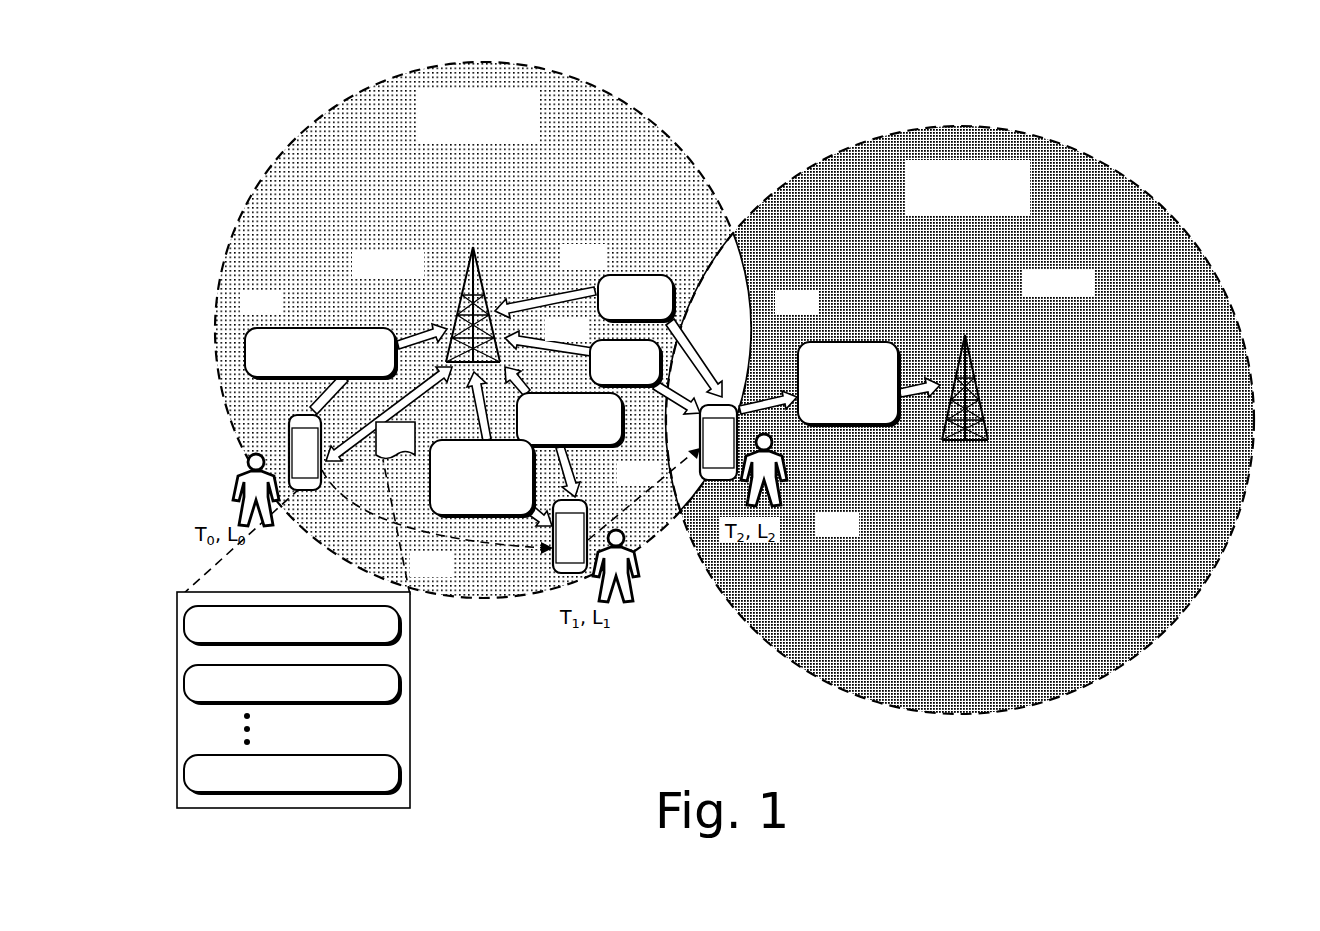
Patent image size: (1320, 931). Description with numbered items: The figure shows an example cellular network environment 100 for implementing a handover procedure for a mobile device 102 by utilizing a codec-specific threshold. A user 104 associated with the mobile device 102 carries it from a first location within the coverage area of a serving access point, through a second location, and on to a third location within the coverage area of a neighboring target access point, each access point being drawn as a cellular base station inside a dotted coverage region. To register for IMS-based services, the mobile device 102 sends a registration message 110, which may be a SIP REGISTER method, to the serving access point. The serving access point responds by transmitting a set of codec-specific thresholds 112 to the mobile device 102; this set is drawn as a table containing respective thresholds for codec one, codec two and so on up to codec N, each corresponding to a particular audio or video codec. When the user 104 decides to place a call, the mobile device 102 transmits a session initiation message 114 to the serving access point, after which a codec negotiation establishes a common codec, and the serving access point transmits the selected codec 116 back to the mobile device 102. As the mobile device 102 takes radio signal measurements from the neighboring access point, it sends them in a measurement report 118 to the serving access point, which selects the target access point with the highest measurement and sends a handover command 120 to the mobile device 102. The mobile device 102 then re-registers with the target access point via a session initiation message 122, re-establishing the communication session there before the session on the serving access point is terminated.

The cellular network environment 100 is at (164, 80).
The mobile device 102 is at (288, 430).
The user 104 is at (246, 468).
The registration message 110 is at (296, 326).
The set of codec-specific thresholds 112 is at (178, 594).
The session initiation message 114 is at (477, 518).
The selected codec 116 is at (594, 446).
The measurement report 118 is at (602, 340).
The handover command (HO) 120 is at (618, 274).
The session initiation message 122 is at (844, 341).